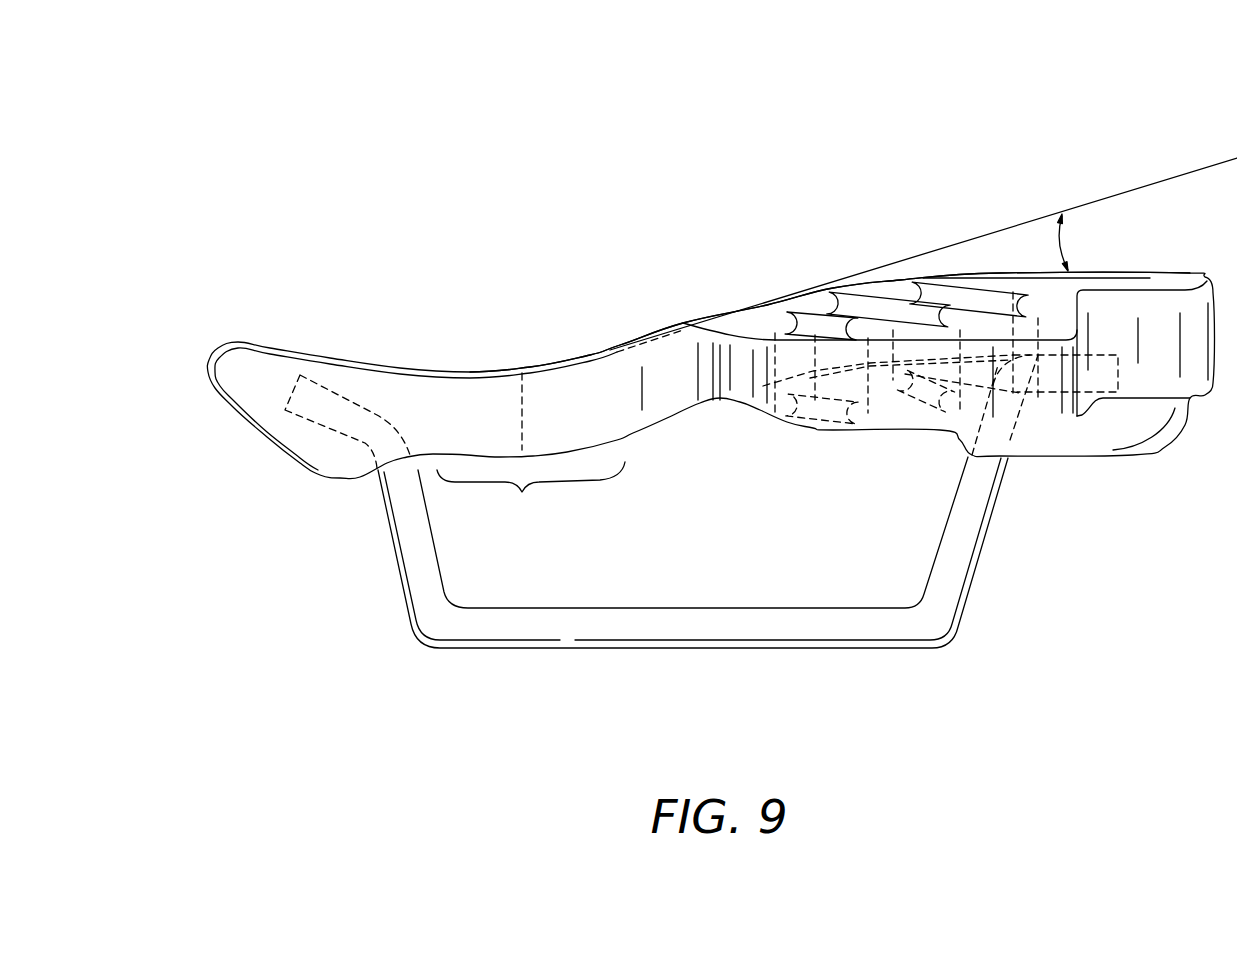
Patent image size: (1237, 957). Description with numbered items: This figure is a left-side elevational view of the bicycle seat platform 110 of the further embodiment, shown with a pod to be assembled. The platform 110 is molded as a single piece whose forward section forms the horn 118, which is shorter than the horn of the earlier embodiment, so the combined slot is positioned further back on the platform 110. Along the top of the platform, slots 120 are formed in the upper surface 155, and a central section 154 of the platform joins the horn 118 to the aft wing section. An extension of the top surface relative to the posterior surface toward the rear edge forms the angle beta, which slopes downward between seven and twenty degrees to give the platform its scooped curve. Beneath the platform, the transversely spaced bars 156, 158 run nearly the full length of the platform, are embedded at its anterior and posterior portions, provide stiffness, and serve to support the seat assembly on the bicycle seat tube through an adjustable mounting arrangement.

The platform 110 is at (762, 157).
The horn 118 is at (302, 352).
The slots 120 is at (917, 287).
The central beam portion 154 is at (531, 500).
The upper surface 155 is at (595, 353).
The frame leg 156 is at (693, 603).
The frame bottom member 158 is at (693, 532).